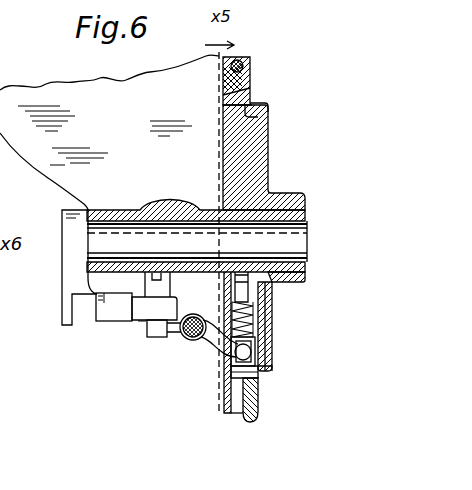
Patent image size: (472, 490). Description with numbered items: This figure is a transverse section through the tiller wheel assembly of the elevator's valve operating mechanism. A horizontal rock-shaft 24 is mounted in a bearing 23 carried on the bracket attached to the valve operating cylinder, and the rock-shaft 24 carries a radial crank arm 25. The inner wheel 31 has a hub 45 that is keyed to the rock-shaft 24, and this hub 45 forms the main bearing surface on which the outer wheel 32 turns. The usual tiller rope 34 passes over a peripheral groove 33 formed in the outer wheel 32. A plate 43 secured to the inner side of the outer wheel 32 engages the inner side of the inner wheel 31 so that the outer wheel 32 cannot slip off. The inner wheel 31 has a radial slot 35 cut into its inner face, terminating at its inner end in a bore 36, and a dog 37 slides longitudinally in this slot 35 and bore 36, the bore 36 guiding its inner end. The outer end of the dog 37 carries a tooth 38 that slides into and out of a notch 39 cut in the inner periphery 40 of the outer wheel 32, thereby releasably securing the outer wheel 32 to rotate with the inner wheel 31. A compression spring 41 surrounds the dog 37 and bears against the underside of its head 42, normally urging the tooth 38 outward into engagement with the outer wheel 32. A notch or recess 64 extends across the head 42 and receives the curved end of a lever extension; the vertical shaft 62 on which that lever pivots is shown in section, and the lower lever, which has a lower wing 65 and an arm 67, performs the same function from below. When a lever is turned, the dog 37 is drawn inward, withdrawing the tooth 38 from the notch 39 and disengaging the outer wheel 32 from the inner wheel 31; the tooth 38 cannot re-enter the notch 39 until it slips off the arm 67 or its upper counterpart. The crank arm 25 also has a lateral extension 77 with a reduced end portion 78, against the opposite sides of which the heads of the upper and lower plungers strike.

The bearing 23 is at (112, 208).
The rock-shaft 24 is at (309, 243).
The radial arm 25 is at (62, 270).
The inner wheel 31 is at (270, 134).
The outer wheel 32 is at (270, 163).
The peripheral groove 33 is at (252, 421).
The tiller rope 34 is at (245, 63).
The radial slot 35 is at (274, 311).
The bore 36 is at (274, 290).
The dog 37 is at (274, 294).
The tooth 38 is at (227, 380).
The notch 39 is at (241, 369).
The inner periphery 40 is at (256, 117).
The compression spring 41 is at (274, 336).
The head 42 is at (274, 372).
The plate 43 is at (233, 92).
The hub 45 is at (307, 203).
The vertical shaft 62 is at (172, 338).
The notch or recess 64 is at (222, 353).
The lower wing 65 is at (148, 334).
The arm 67 is at (222, 340).
The lateral extension 77 is at (112, 322).
The reduced end portion 78 is at (140, 323).